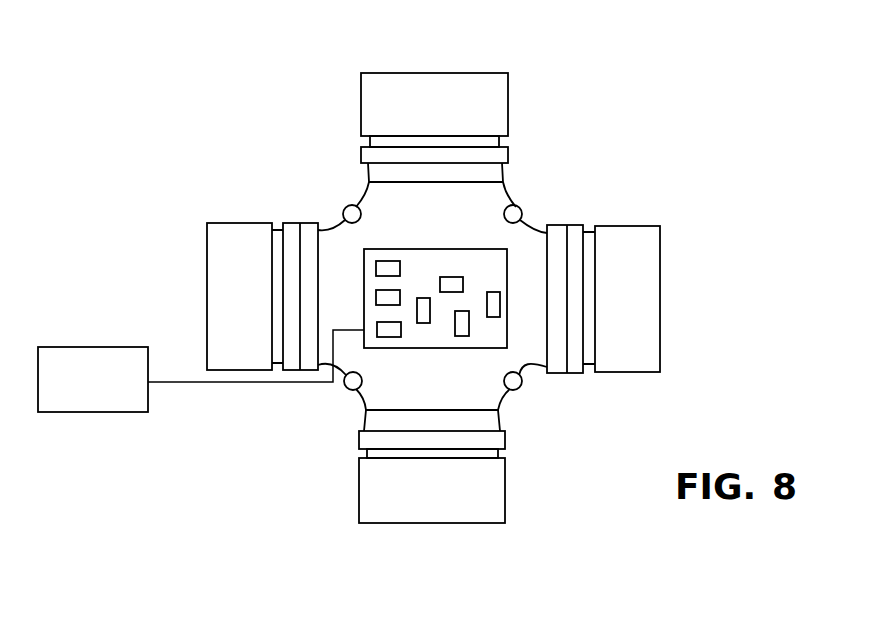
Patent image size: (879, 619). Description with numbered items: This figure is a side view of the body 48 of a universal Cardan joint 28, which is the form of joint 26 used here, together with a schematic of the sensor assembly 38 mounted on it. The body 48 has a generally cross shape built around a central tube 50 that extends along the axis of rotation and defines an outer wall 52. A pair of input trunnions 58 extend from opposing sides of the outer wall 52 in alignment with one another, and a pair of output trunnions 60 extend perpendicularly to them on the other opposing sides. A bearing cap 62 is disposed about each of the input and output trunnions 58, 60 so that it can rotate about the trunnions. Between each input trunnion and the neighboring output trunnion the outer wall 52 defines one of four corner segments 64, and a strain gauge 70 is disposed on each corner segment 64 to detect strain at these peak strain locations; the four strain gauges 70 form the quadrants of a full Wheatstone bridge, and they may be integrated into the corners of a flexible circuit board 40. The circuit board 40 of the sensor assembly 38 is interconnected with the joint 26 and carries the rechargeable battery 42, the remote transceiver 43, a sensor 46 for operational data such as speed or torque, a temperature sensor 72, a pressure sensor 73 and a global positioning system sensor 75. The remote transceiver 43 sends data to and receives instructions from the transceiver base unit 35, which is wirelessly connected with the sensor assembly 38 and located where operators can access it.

The joint 26 is at (209, 410).
The universal Cardan joint 28 is at (708, 181).
The transceiver base unit 35 is at (65, 400).
The sensor assembly 38 is at (508, 354).
The circuit board 40 is at (497, 260).
The rechargeable battery 42 is at (388, 268).
The remote transceiver 43 is at (386, 297).
The sensor 46 is at (452, 328).
The body 48 is at (331, 228).
The central tube 50 is at (508, 203).
The outer wall 52 is at (560, 224).
The input trunnions 58 is at (505, 196).
The output trunnions 60 is at (335, 312).
The bearing cap 62 is at (393, 92).
The corner segments 64 is at (359, 206).
The strain gauge 70 is at (341, 223).
The temperature sensor 72 is at (462, 284).
The pressure sensor 73 is at (423, 298).
The global positioning system sensor 75 is at (493, 308).